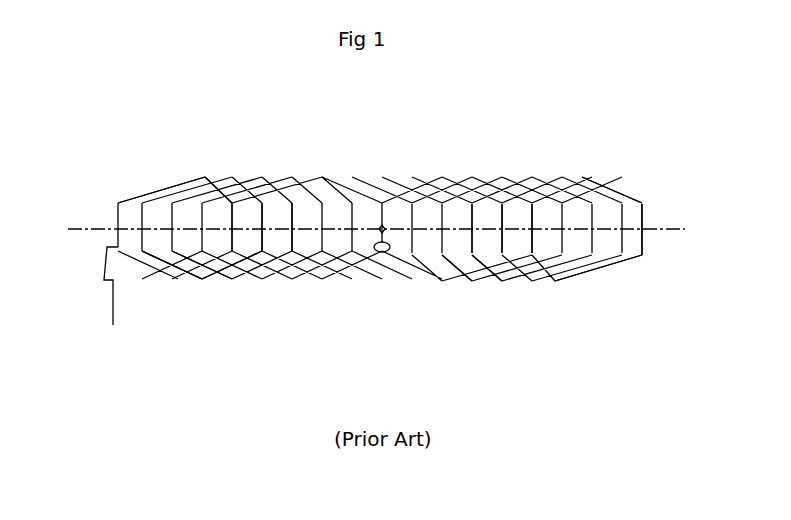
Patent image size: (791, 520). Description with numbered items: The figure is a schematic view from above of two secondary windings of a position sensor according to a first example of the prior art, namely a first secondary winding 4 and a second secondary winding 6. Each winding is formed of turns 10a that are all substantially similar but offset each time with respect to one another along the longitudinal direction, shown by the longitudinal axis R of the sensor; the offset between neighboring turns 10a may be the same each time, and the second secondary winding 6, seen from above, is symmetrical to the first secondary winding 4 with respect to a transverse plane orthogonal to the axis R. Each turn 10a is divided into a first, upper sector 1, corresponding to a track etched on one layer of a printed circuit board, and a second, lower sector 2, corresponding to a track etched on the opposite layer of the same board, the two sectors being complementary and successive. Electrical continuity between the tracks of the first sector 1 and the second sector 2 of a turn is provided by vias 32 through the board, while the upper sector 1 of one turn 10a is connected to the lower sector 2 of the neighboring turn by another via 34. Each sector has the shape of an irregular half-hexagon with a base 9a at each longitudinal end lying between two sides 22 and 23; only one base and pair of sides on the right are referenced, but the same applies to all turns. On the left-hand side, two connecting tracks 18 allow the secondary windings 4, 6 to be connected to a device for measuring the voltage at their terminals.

The first, upper sector 1 is at (132, 198).
The second, lower sector 2 is at (207, 182).
The first secondary winding 4 is at (255, 152).
The second secondary winding 6 is at (487, 152).
The base 9a is at (642, 237).
The turns 10a is at (178, 280).
The connecting tracks 18 is at (113, 292).
The side 22 is at (618, 188).
The side 23 is at (628, 267).
The via 32 is at (203, 180).
The via 34 is at (200, 282).
The longitudinal axis R is at (660, 228).